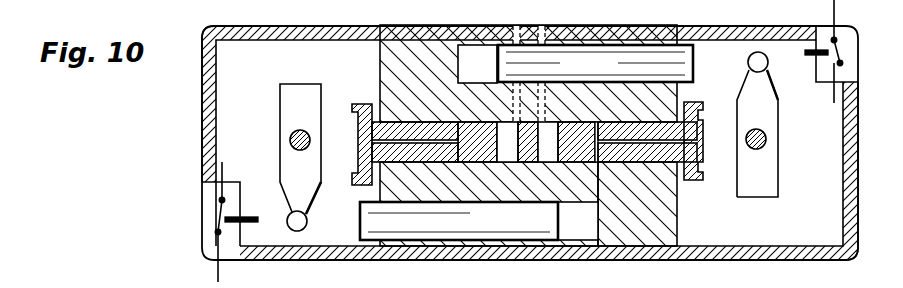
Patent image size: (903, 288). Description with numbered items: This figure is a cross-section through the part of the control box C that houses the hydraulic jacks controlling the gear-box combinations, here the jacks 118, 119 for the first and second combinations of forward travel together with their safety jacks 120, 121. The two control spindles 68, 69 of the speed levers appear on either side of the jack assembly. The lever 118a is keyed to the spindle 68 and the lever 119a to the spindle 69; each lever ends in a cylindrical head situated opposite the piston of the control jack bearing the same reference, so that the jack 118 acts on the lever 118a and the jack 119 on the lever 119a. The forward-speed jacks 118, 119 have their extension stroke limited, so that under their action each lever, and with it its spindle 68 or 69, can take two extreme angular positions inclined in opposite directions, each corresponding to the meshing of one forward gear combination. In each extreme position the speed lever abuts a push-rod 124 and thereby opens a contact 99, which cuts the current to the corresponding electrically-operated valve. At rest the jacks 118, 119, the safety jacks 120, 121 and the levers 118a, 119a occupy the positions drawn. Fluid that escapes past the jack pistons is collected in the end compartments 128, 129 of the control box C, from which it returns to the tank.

The control spindle 68 is at (289, 140).
The control spindle 69 is at (768, 140).
The contact 99 is at (208, 216).
The jack for 1st forward combination 118 is at (518, 228).
The speed lever 118a is at (330, 209).
The jack for 2nd forward combination 119 is at (595, 63).
The speed lever 119a is at (748, 65).
The safety jack 120 is at (648, 130).
The safety jack 121 is at (390, 128).
The push-rod 124 is at (808, 58).
The end compartment 128 is at (300, 214).
The end compartment 129 is at (760, 214).
The control box C is at (426, 12).